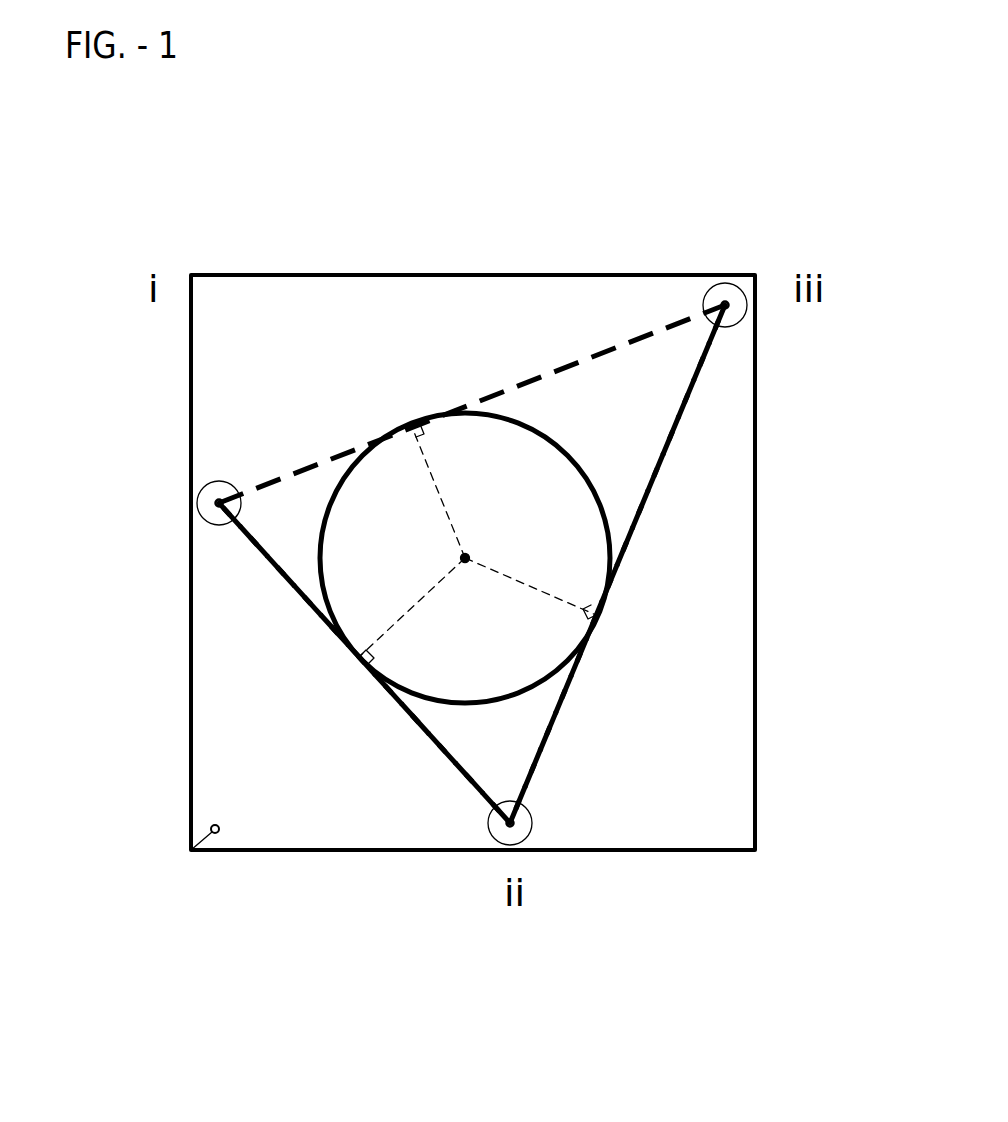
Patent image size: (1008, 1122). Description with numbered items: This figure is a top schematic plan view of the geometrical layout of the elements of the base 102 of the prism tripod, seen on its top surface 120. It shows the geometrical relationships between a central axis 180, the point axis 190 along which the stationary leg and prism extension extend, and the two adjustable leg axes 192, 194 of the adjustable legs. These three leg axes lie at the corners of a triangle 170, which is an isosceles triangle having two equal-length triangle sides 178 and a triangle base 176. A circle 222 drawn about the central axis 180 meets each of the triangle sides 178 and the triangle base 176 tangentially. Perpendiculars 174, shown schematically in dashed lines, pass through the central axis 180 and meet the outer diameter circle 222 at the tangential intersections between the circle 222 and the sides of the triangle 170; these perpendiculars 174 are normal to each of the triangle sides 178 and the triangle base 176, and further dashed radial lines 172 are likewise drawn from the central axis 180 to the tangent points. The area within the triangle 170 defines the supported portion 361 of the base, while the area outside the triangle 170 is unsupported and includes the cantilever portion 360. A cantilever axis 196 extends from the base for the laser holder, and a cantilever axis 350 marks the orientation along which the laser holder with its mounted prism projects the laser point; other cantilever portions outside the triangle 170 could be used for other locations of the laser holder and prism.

The base 102 is at (680, 777).
The top surface 120 is at (697, 738).
The triangle 170 is at (640, 520).
The radius line 172 is at (452, 493).
The perpendiculars 174 is at (421, 598).
The triangle base 176 is at (433, 742).
The triangle sides 178 is at (562, 369).
The central axis 180 is at (465, 562).
The point axis 190 is at (725, 305).
The adjustable leg axis 192 is at (510, 823).
The adjustable leg axis 194 is at (219, 503).
The cantilever axis 196 is at (190, 853).
The circle 222 is at (590, 488).
The cantilever axis 350 is at (215, 827).
The cantilever portion 360 is at (280, 830).
The supported portion 361 is at (660, 398).